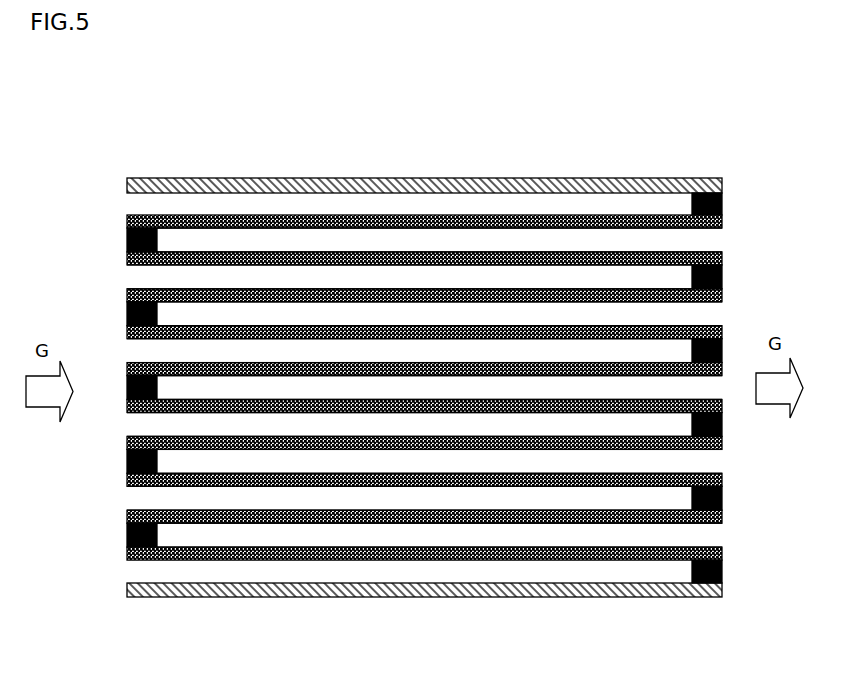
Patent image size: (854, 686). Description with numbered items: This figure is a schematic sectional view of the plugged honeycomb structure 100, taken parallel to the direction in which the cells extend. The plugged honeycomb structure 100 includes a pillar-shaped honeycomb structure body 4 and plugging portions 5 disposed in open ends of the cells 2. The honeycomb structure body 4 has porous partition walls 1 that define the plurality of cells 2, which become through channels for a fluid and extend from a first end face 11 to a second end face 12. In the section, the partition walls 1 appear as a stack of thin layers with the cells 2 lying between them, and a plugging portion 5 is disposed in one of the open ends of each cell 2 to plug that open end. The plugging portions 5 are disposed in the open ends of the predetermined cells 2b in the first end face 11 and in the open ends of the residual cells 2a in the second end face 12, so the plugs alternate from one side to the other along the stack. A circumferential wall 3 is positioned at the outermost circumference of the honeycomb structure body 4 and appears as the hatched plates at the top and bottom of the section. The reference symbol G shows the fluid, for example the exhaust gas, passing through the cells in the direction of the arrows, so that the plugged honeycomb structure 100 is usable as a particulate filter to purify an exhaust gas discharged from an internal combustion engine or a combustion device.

The plugged honeycomb structure 100 is at (689, 88).
The porous partition walls 1 is at (455, 219).
The cells 2 is at (424, 380).
The residual cells 2a is at (141, 277).
The predetermined cells 2b is at (707, 241).
The circumferential wall 3 is at (512, 186).
The honeycomb structure body 4 is at (566, 172).
The plugging portions 5 is at (127, 238).
The first end face 11 is at (108, 584).
The second end face 12 is at (742, 585).